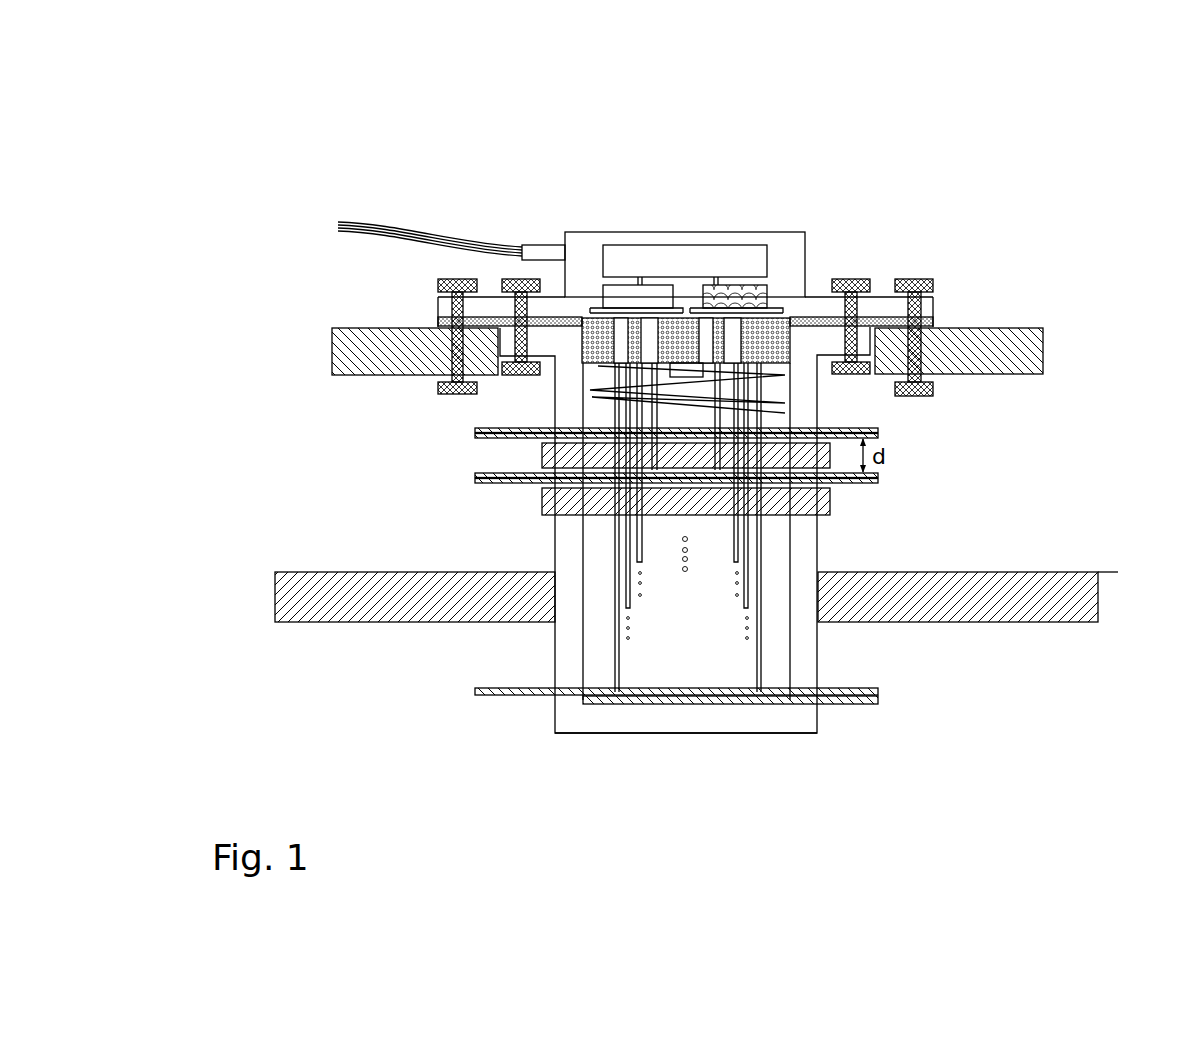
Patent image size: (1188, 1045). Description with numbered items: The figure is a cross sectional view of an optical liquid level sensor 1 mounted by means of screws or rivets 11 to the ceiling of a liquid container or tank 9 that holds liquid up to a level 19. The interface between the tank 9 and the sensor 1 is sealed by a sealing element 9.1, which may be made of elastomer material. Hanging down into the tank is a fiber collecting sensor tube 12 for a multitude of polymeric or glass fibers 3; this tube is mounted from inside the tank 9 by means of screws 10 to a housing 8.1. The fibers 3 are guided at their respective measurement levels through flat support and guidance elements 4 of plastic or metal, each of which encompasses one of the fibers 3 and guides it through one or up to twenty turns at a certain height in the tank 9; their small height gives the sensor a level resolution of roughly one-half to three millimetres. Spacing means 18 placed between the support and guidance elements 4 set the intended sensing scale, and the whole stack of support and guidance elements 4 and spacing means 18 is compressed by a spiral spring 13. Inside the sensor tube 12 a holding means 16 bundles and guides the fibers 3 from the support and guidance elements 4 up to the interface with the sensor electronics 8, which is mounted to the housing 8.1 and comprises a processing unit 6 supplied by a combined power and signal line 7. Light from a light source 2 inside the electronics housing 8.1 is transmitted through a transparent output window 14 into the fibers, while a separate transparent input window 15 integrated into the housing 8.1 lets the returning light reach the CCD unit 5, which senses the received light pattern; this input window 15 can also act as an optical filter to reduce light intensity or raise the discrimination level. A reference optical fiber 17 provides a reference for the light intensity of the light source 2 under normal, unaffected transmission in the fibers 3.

The optical liquid level sensor 1 is at (643, 157).
The light source 2 is at (685, 455).
The polymeric or glass fibers 3 is at (782, 548).
The support and guidance elements 4 is at (623, 584).
The CCD unit 5 is at (676, 221).
The processing unit 6 is at (625, 258).
The combined power and signal line 7 is at (400, 173).
The sensor electronics 8 is at (768, 221).
The housing 8.1 is at (685, 243).
The liquid container or tank 9 is at (675, 287).
The sealing element 9.1 is at (686, 259).
The screws 10 is at (677, 313).
The screws or rivets 11 is at (659, 318).
The fiber collecting sensor tube 12 is at (681, 754).
The spiral spring 13 is at (601, 395).
The transparent output window 14 is at (785, 240).
The transparent input window 15 is at (556, 238).
The holding means 16 is at (730, 367).
The reference optical fiber 17 is at (598, 393).
The spacing means 18 is at (631, 498).
The liquid level 19 is at (729, 528).